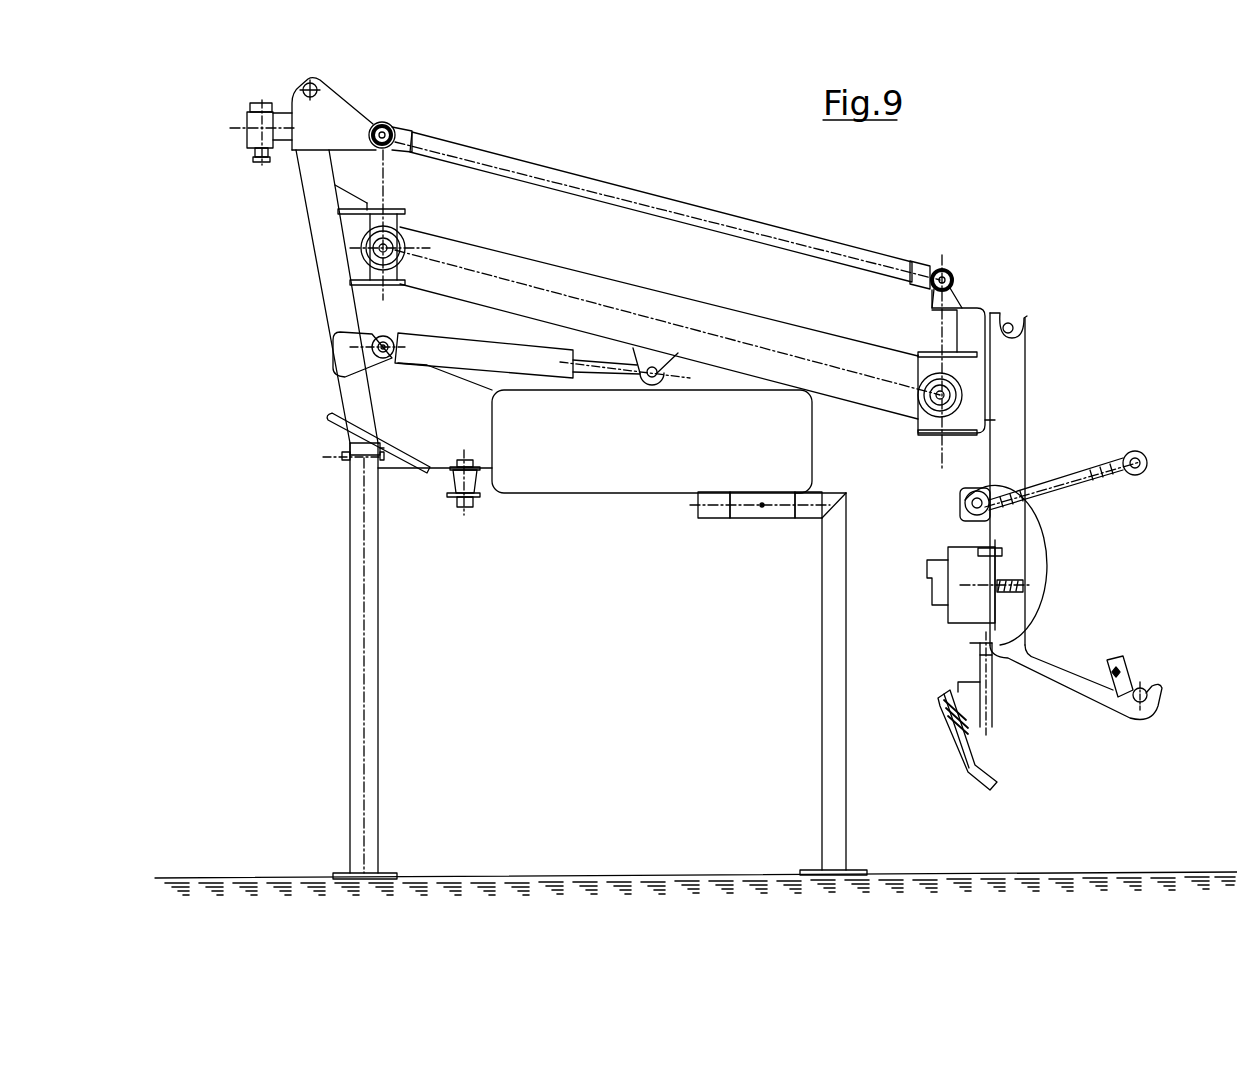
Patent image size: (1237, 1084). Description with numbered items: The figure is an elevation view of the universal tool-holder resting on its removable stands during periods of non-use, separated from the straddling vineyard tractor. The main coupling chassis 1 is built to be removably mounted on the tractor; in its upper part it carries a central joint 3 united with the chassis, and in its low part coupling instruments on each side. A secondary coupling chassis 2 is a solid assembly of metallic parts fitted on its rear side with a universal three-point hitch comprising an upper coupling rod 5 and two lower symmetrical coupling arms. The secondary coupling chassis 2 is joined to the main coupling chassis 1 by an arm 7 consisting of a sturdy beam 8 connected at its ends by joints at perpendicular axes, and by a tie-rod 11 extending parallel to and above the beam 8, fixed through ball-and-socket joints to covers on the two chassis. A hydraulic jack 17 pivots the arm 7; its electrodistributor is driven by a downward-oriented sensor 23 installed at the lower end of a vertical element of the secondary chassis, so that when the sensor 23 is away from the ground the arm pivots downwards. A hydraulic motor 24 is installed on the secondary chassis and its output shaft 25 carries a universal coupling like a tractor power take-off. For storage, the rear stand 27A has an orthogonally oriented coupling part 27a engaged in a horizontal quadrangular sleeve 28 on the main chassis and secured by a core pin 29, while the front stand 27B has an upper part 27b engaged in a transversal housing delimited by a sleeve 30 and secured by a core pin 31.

The main coupling chassis 1 is at (278, 270).
The secondary coupling chassis 2 is at (1043, 380).
The central joint 3 is at (277, 132).
The coupling rod 5 is at (1075, 473).
The arm 7 is at (662, 178).
The beam 8 is at (490, 252).
The tie-rod 11 is at (585, 182).
The jack 17 is at (445, 352).
The sensor 23 is at (983, 768).
The hydraulic motor 24 is at (980, 570).
The output shaft 25 is at (1023, 587).
The coupling part 27a is at (808, 512).
The removable stand 27A is at (830, 823).
The upper part of stand 27b is at (350, 447).
The removable stand 27B is at (356, 703).
The sleeve 28 is at (738, 513).
The core pin 29 is at (762, 507).
The sleeve 30 is at (350, 465).
The core pin 31 is at (342, 458).